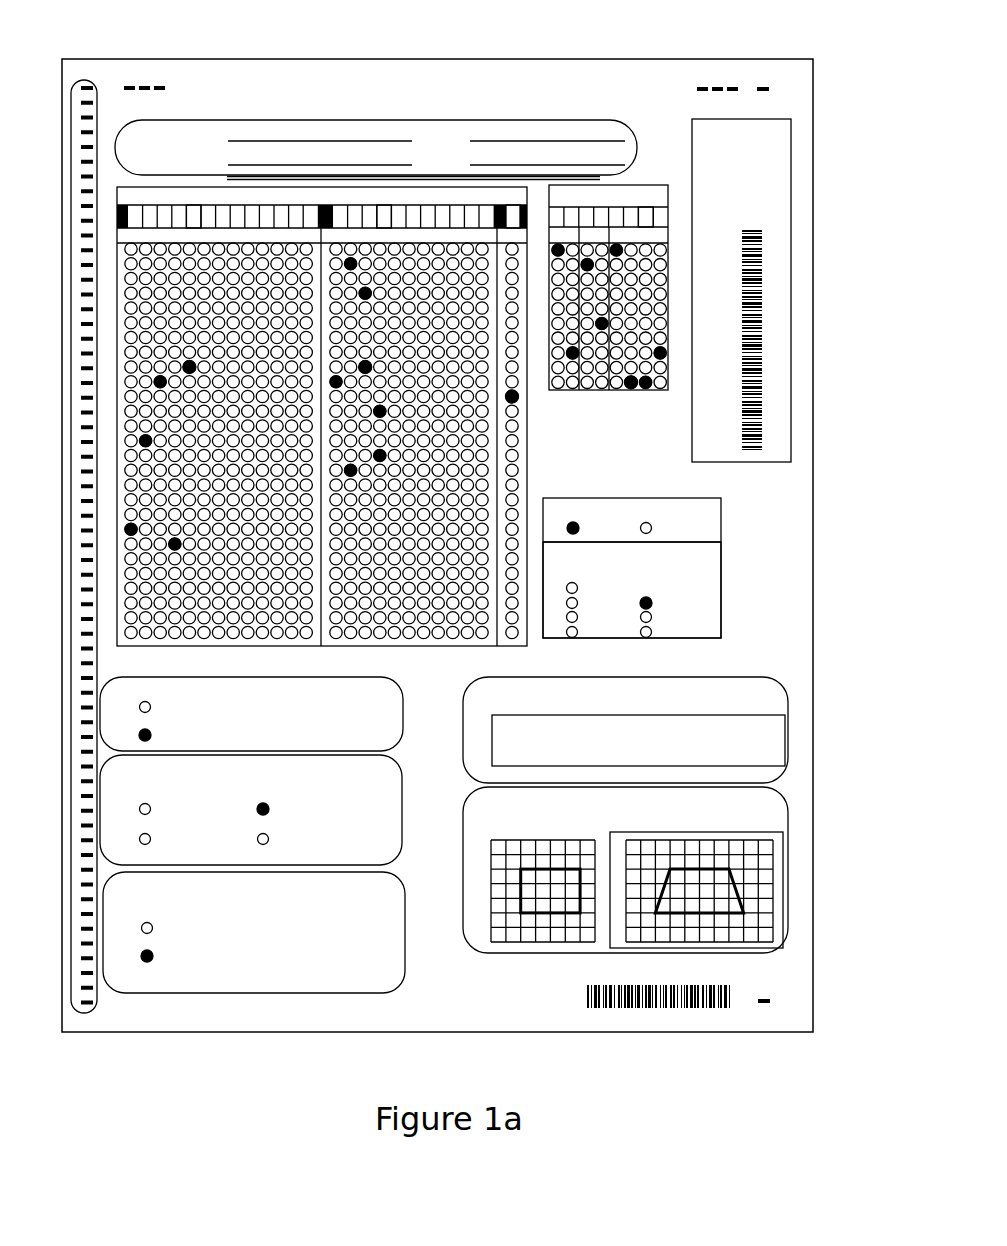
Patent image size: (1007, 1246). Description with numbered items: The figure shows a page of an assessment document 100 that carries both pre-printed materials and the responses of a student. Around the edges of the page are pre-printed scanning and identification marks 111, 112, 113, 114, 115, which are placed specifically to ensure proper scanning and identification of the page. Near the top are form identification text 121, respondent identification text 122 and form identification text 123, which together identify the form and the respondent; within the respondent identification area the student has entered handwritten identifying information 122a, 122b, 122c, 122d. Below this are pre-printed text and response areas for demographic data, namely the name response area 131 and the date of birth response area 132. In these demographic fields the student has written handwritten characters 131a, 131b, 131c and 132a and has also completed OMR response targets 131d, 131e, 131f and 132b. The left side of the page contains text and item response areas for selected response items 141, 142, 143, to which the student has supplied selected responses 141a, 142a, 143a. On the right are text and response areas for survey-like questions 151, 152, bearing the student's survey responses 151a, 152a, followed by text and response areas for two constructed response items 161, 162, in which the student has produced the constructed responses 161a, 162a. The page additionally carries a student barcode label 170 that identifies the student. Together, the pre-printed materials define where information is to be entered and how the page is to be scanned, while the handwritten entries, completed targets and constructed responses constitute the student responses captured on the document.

The assessment document page 100 is at (528, 78).
The scanning and identification mark 111 is at (80, 78).
The scanning and identification mark 112 is at (161, 84).
The scanning and identification mark 113 is at (736, 84).
The scanning and identification mark 114 is at (775, 1001).
The scanning and identification mark 115 is at (650, 1010).
The form identification text 121 is at (432, 87).
The respondent identification text 122 is at (420, 106).
The handwritten identifying information 122a is at (314, 120).
The handwritten identifying information 122b is at (599, 120).
The handwritten identifying information 122c is at (301, 149).
The handwritten identifying information 122d is at (541, 150).
The form identification text 123 is at (500, 1008).
The name response area 131 is at (356, 357).
The handwritten character 131a is at (189, 208).
The handwritten character 131b is at (380, 207).
The handwritten character 131c is at (511, 207).
The completed OMR response target 131d is at (184, 359).
The completed OMR response target 131e is at (359, 362).
The completed OMR response target 131f is at (519, 402).
The date of birth response area 132 is at (620, 257).
The handwritten character 132a is at (650, 205).
The completed OMR response target 132b is at (641, 342).
The selected response item 141 is at (285, 701).
The selected response 141a is at (141, 728).
The selected response item 142 is at (283, 793).
The selected response 142a is at (268, 802).
The selected response item 143 is at (254, 974).
The selected response 143a is at (148, 966).
The survey question 151 is at (706, 557).
The survey response 151a is at (579, 522).
The survey question 152 is at (673, 589).
The survey response 152a is at (654, 598).
The constructed response item 161 is at (665, 730).
The constructed response 161a is at (645, 732).
The constructed response item 162 is at (668, 870).
The constructed response 162a is at (745, 888).
The student barcode label 170 is at (776, 186).